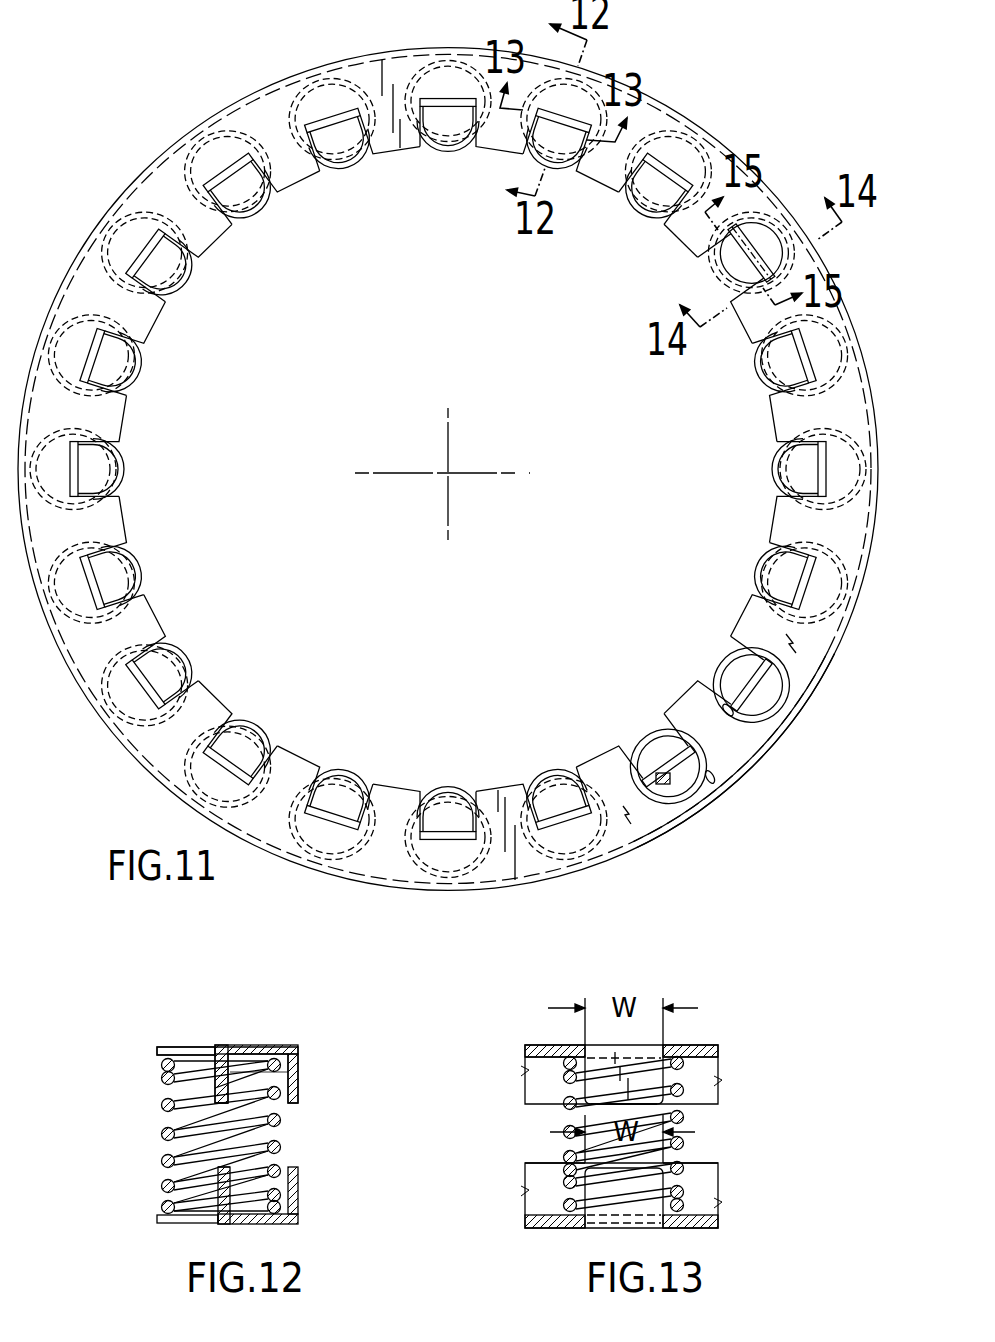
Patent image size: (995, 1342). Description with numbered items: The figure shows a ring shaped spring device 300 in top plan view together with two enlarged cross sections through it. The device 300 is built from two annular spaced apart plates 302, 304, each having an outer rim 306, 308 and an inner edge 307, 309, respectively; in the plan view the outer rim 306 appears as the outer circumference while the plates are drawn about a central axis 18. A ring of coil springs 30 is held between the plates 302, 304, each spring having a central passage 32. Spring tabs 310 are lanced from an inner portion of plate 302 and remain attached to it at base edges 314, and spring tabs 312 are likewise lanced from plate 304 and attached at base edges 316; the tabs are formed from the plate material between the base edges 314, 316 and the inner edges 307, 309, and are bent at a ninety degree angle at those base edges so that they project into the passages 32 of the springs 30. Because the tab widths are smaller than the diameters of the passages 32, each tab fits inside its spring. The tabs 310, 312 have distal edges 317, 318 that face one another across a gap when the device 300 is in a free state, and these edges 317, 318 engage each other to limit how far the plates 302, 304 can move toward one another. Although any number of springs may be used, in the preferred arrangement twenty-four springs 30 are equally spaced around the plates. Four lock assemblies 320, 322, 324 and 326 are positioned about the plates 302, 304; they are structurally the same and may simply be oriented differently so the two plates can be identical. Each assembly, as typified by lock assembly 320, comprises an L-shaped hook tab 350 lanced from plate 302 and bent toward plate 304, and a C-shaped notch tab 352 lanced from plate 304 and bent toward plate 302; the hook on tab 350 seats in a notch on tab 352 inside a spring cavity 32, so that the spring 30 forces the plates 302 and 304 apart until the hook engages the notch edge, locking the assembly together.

In FIG. 11, the axis of rotation 18 is at (452, 470).
In FIG. 11, the spring 30 is at (452, 146).
In FIG. 12, the spring 30 is at (162, 1105).
In FIG. 11, the passage of spring 32 is at (342, 800).
In FIG. 12, the passage of spring 32 is at (245, 1083).
In FIG. 13, the passage of spring 32 is at (653, 1160).
In FIG. 11, the ring shaped spring device 300 is at (695, 100).
In FIG. 12, the ring shaped spring device 300 is at (172, 1030).
In FIG. 13, the ring shaped spring device 300 is at (727, 1025).
In FIG. 11, the plate 302 is at (269, 123).
In FIG. 12, the plate 302 is at (270, 1046).
In FIG. 13, the plate 302 is at (718, 1057).
In FIG. 11, the plate 304 is at (752, 747).
In FIG. 12, the plate 304 is at (245, 1213).
In FIG. 13, the plate 304 is at (718, 1202).
In FIG. 11, the outer rim 306 is at (712, 132).
In FIG. 12, the outer rim 306 is at (298, 1072).
In FIG. 13, the outer rim 306 is at (707, 1090).
In FIG. 11, the inner edge 307 is at (712, 205).
In FIG. 12, the inner edge 307 is at (160, 1050).
In FIG. 11, the outer rim 308 is at (703, 812).
In FIG. 12, the outer rim 308 is at (298, 1200).
In FIG. 13, the outer rim 308 is at (712, 1178).
In FIG. 11, the inner edge 309 is at (683, 703).
In FIG. 12, the inner edge 309 is at (160, 1218).
In FIG. 11, the spring tab 310 is at (340, 132).
In FIG. 12, the spring tab 310 is at (213, 1078).
In FIG. 13, the spring tab 310 is at (635, 1072).
In FIG. 11, the spring tab 312 is at (768, 676).
In FIG. 12, the spring tab 312 is at (215, 1198).
In FIG. 13, the spring tab 312 is at (593, 1183).
In FIG. 11, the base edge 314 is at (333, 137).
In FIG. 12, the base edge 314 is at (220, 1055).
In FIG. 13, the base edge 314 is at (623, 1045).
In FIG. 11, the base edge 316 is at (772, 702).
In FIG. 12, the base edge 316 is at (218, 1225).
In FIG. 13, the base edge 316 is at (635, 1222).
In FIG. 12, the distal edge 317 is at (223, 1107).
In FIG. 13, the distal edge 317 is at (623, 1103).
In FIG. 11, the distal edge 318 is at (748, 672).
In FIG. 12, the distal edge 318 is at (227, 1170).
In FIG. 13, the distal edge 318 is at (655, 1160).
In FIG. 11, the lock assembly 320 is at (758, 243).
In FIG. 11, the lock assembly 322 is at (213, 171).
In FIG. 11, the lock assembly 324 is at (165, 680).
In FIG. 11, the lock assembly 326 is at (665, 752).
In FIG. 11, the hook tab 350 is at (665, 783).
In FIG. 11, the notch tab 352 is at (712, 778).